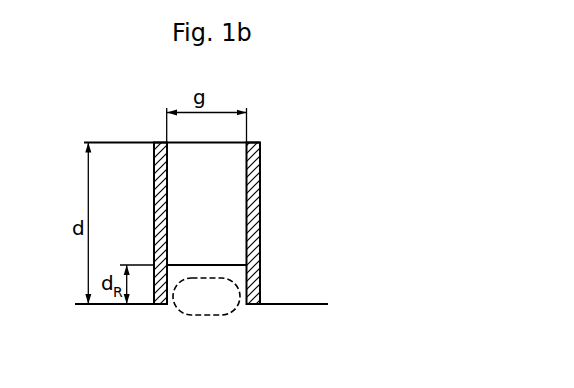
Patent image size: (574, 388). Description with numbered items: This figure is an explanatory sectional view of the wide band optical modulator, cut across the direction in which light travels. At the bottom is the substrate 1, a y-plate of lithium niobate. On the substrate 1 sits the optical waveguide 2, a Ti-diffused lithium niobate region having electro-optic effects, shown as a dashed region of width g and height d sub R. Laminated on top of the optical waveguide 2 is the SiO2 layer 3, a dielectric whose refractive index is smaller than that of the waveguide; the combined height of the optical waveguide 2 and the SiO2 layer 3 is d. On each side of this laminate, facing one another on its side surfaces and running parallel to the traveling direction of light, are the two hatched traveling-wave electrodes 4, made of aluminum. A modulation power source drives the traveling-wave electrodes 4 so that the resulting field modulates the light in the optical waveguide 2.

The substrate 1 is at (162, 338).
The optical waveguide 2 is at (212, 305).
The SiO2 layer 3 is at (207, 204).
The traveling-wave electrodes 4 is at (154, 176).